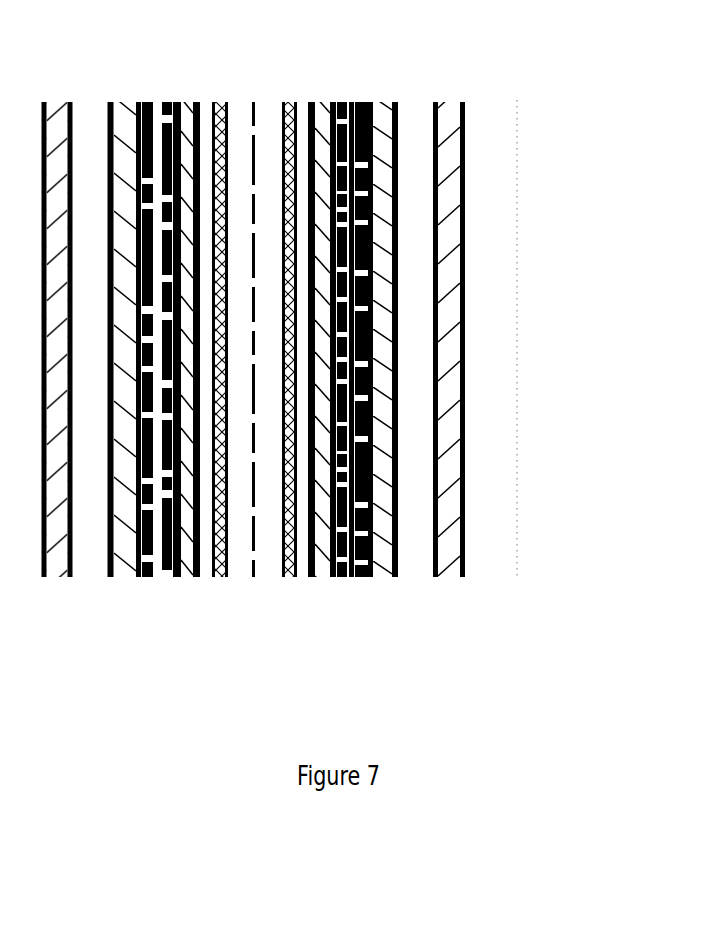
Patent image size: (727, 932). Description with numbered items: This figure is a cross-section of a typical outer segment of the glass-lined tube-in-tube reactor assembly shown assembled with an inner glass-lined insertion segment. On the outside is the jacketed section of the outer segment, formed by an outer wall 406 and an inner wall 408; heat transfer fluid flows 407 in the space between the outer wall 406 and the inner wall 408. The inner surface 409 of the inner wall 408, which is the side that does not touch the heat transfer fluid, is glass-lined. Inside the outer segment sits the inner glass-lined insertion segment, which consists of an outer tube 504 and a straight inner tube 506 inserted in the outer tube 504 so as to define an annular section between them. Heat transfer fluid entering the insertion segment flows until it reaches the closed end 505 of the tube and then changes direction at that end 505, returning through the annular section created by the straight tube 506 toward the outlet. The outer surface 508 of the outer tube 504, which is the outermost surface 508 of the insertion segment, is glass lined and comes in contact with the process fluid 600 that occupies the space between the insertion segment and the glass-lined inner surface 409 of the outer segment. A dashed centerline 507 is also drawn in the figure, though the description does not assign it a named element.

The outer wall 406 is at (467, 292).
The heat transfer fluid flow 407 is at (415, 465).
The inner wall 408 is at (393, 577).
The inner surface 409 is at (363, 575).
The outer tube 504 is at (322, 100).
The closed end 505 is at (300, 583).
The straight inner tube 506 is at (215, 585).
The dashed line 507 is at (253, 100).
The outer surface 508 is at (343, 113).
The process fluid 600 is at (357, 578).